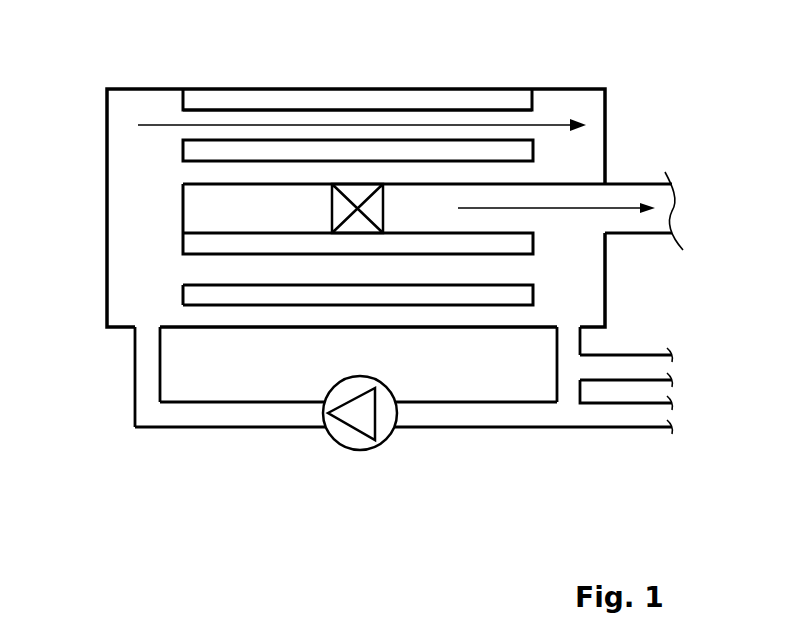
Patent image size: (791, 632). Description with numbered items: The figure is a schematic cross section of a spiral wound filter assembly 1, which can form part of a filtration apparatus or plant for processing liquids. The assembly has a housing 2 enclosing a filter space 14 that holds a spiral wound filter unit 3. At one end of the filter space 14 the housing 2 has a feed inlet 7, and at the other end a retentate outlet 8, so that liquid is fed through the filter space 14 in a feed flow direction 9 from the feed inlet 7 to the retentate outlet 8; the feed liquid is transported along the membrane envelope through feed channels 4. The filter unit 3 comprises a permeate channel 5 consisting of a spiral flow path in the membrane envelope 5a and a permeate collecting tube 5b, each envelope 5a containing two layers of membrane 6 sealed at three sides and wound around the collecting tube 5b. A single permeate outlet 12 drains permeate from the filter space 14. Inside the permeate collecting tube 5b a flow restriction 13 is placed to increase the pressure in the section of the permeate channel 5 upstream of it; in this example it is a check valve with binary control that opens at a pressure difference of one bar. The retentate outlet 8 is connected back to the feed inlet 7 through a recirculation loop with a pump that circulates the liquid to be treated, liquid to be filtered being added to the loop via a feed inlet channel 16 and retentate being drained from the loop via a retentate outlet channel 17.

The spiral wound filter assembly 1 is at (650, 85).
The housing 2 is at (143, 80).
The spiral wound filter unit 3 is at (284, 91).
The feed channels 4 is at (357, 117).
The permeate channel 5 is at (415, 100).
The membrane envelope 5a is at (417, 294).
The permeate collecting tube 5b is at (470, 222).
The membrane 6 is at (473, 108).
The feed inlet 7 is at (147, 327).
The retentate outlet 8 is at (568, 327).
The feed flow direction 9 is at (545, 123).
The permeate outlet 12 is at (653, 195).
The flow restriction 13 is at (340, 208).
The filter space 14 is at (173, 293).
The feed inlet channel 16 is at (655, 417).
The retentate outlet channel 17 is at (655, 369).